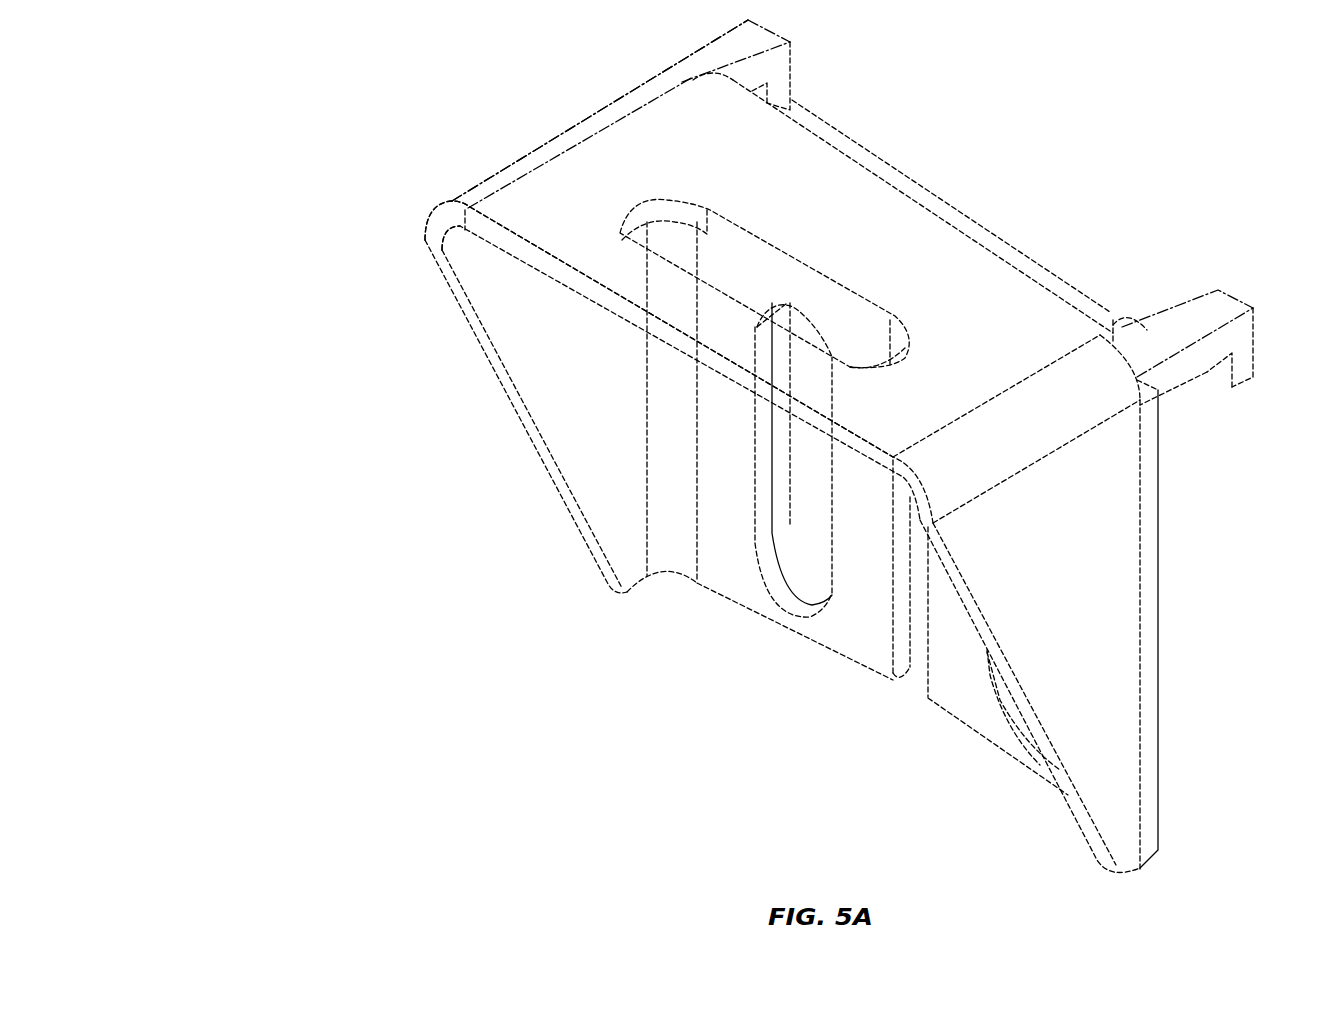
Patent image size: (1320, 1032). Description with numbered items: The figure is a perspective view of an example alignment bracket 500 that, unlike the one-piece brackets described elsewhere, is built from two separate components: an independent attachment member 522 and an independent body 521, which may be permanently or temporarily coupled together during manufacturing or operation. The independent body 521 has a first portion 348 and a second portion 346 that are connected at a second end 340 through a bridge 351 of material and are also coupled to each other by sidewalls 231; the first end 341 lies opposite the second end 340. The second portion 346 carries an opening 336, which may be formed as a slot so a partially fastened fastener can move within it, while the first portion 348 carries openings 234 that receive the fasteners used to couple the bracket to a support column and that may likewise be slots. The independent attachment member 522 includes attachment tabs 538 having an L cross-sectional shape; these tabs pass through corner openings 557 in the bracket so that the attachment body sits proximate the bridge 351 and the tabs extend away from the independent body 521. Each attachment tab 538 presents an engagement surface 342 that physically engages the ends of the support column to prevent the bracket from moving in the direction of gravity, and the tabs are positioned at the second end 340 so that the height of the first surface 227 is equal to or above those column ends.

The alignment bracket 500 is at (131, 68).
The independent attachment member 522 is at (1200, 217).
The second end 340 is at (915, 203).
The bridge 351 is at (1007, 248).
The first surface 227 is at (633, 133).
The second portion 346 is at (533, 208).
The corner openings 557 is at (680, 82).
The attachment tabs 538 is at (777, 68).
The engagement surfaces 342 is at (757, 97).
The opening 336 is at (703, 247).
The sidewalls 231 is at (540, 377).
The openings 234 is at (817, 560).
The first portion 348 is at (923, 618).
The first end 341 is at (921, 688).
The independent body 521 is at (1137, 470).